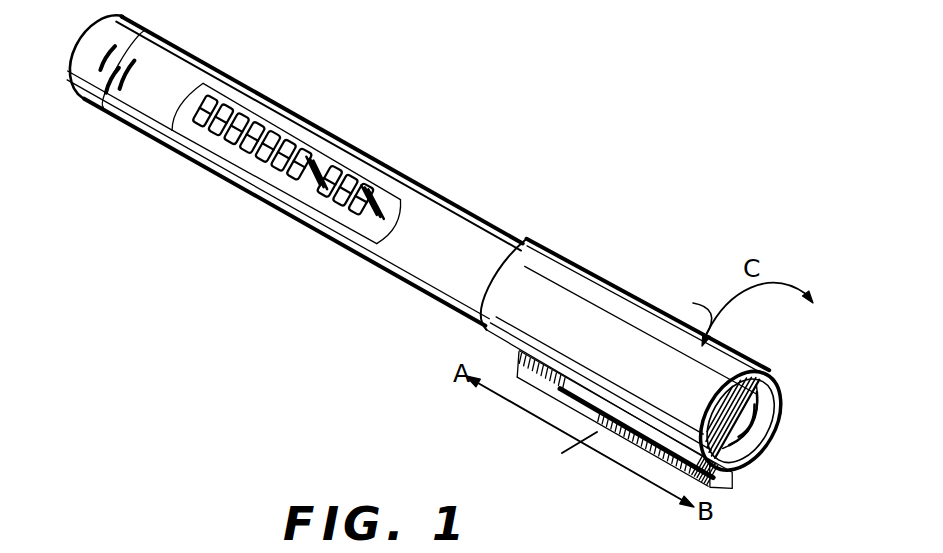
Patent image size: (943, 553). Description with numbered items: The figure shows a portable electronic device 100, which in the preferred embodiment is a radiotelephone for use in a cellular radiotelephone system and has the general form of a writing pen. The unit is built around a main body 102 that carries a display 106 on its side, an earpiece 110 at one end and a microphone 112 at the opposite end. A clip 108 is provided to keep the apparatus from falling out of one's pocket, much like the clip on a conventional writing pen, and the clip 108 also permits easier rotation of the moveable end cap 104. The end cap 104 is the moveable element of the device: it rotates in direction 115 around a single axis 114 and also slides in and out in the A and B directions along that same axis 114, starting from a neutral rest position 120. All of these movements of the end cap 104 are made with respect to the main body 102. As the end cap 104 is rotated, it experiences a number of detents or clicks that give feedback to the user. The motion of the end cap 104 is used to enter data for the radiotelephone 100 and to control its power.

The portable electronic device 100 is at (460, 272).
The main body 102 is at (440, 207).
The end cap 104 is at (607, 282).
The display 106 is at (345, 238).
The clip 108 is at (712, 482).
The earpiece 110 is at (747, 417).
The microphone 112 is at (112, 96).
The axis 114 is at (530, 412).
The rotation direction 115 is at (686, 313).
The neutral rest position 120 is at (573, 443).